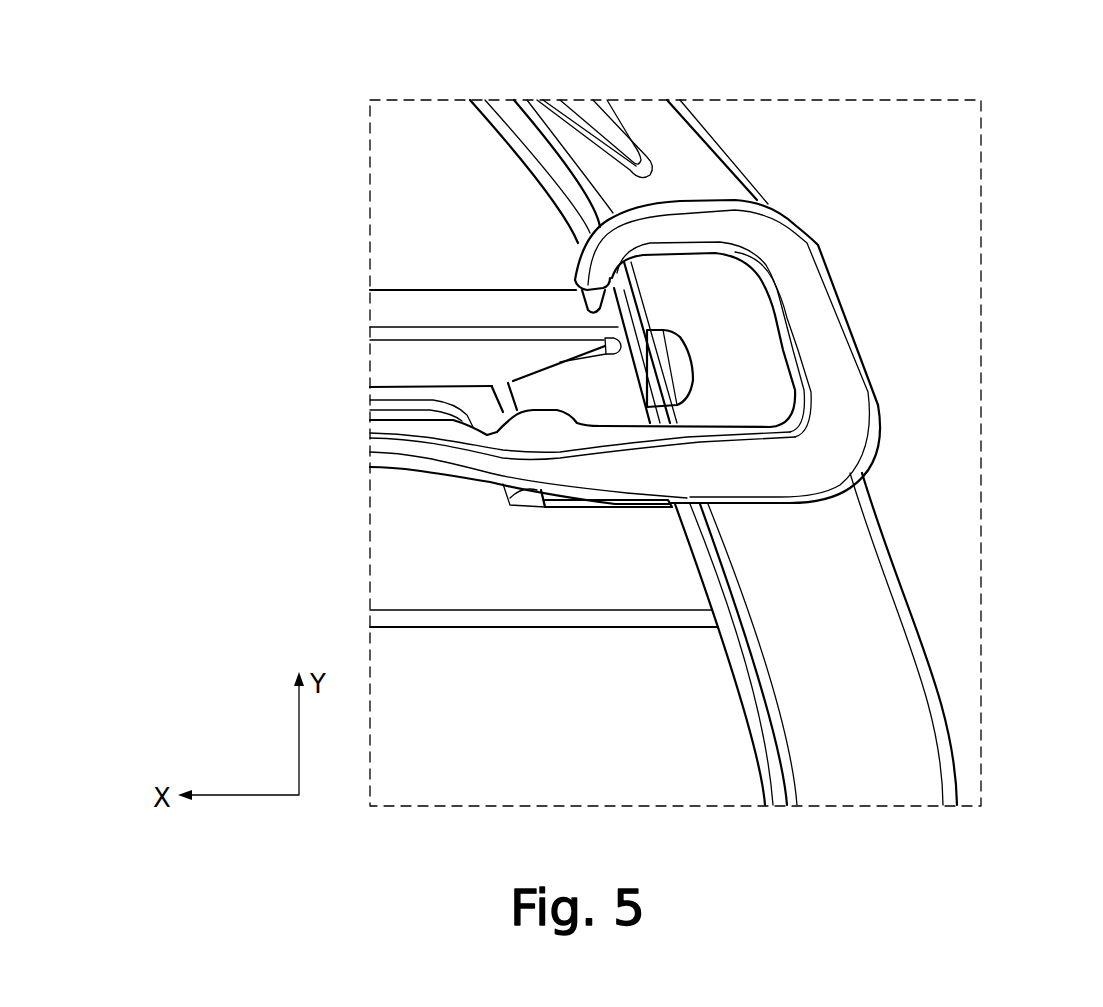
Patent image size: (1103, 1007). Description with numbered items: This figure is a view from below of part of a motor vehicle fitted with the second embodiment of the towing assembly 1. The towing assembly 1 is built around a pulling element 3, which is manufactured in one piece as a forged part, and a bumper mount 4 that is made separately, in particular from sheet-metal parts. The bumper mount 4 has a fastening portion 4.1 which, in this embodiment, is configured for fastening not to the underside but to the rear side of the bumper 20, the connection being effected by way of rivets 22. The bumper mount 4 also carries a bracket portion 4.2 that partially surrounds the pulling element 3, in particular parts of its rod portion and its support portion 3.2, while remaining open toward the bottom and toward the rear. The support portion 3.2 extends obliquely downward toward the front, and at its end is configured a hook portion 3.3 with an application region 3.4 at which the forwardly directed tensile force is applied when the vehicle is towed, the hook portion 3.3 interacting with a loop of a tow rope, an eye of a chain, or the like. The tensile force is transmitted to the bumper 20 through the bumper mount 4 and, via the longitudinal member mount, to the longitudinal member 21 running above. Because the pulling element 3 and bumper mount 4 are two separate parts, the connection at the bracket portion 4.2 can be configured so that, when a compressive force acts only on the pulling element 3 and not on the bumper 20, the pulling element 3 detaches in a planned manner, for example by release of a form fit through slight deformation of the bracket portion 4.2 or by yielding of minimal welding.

The towing assembly 1 is at (853, 220).
The pulling element 3 is at (684, 377).
The support portion 3.2 is at (413, 470).
The hook portion 3.3 is at (771, 269).
The application region 3.4 is at (762, 332).
The bumper mount 4 is at (457, 477).
The fastening portion 4.1 is at (617, 367).
The bracket portion 4.2 is at (432, 378).
The bumper 20 is at (868, 633).
The longitudinal member 21 is at (460, 333).
The rivets 22 is at (688, 380).